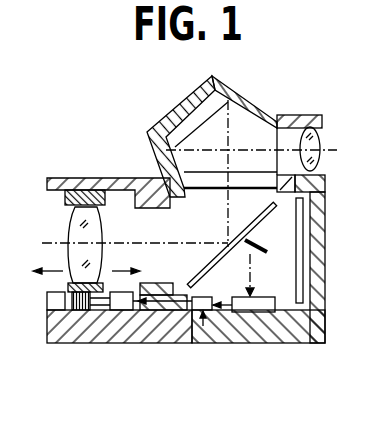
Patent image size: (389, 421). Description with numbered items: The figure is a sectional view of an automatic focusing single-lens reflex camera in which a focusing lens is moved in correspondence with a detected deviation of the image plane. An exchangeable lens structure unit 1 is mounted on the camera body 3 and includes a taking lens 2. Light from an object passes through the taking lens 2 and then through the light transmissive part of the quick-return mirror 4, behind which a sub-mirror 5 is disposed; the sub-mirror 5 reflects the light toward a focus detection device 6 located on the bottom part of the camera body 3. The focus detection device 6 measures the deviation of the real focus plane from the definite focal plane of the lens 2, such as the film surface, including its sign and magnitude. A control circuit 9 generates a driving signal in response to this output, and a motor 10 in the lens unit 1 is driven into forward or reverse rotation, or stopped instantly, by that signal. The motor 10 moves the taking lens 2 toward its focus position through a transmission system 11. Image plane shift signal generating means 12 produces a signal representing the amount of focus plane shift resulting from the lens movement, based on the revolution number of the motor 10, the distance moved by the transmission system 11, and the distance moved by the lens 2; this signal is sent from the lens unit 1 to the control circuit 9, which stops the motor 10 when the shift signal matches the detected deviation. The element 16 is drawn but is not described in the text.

The exchangeable lens structure unit 1 is at (118, 178).
The taking lens 2 is at (102, 233).
The camera body 3 is at (327, 186).
The quick-return mirror 4 is at (268, 213).
The sub-mirror 5 is at (266, 254).
The focus detection device 6 is at (258, 313).
The control circuit 9 is at (208, 311).
The motor 10 is at (123, 311).
The transmission system 11 is at (85, 311).
The image plane shift signal generating means 12 is at (47, 297).
The prism 16 is at (260, 132).